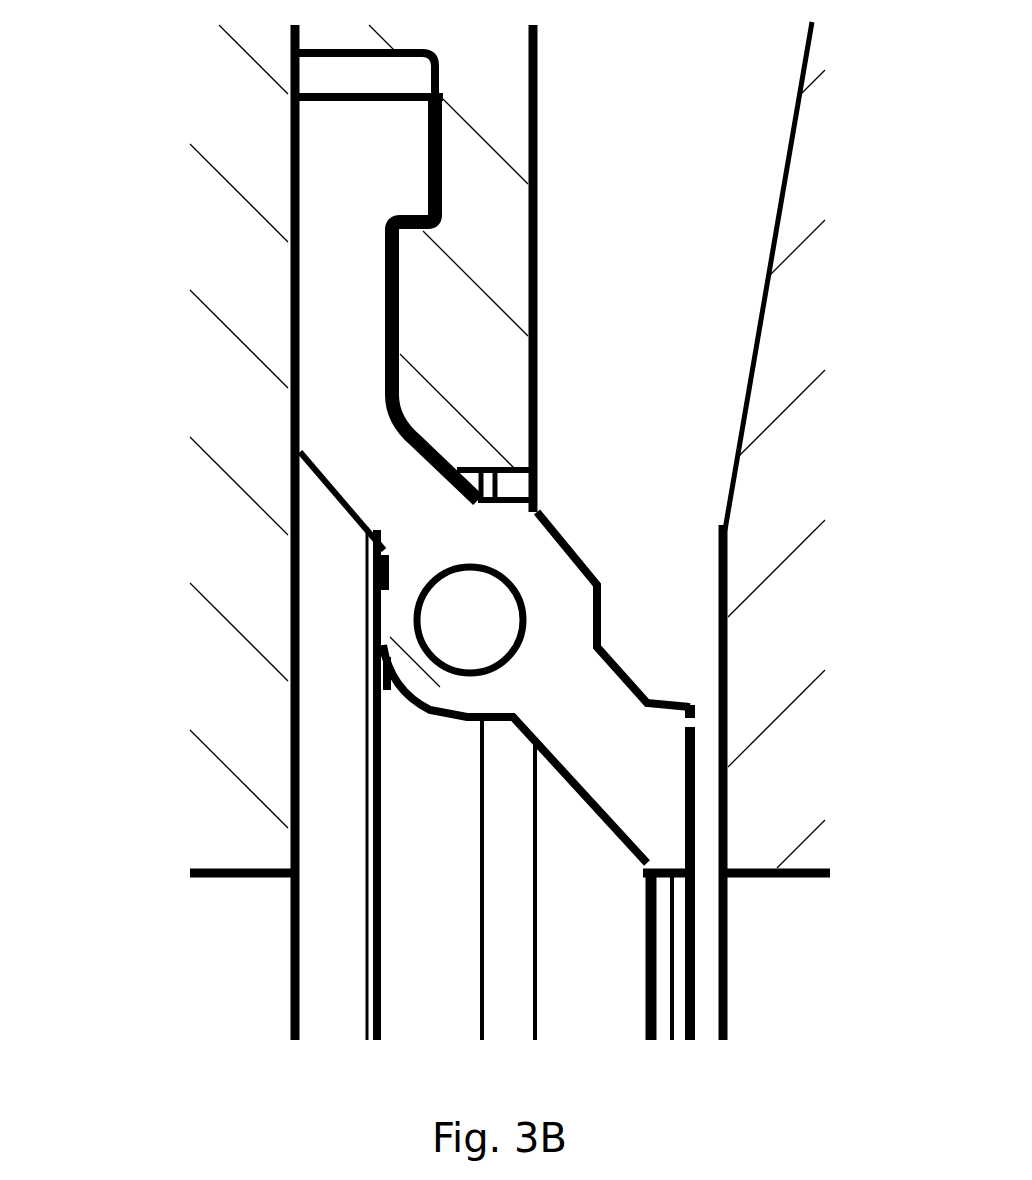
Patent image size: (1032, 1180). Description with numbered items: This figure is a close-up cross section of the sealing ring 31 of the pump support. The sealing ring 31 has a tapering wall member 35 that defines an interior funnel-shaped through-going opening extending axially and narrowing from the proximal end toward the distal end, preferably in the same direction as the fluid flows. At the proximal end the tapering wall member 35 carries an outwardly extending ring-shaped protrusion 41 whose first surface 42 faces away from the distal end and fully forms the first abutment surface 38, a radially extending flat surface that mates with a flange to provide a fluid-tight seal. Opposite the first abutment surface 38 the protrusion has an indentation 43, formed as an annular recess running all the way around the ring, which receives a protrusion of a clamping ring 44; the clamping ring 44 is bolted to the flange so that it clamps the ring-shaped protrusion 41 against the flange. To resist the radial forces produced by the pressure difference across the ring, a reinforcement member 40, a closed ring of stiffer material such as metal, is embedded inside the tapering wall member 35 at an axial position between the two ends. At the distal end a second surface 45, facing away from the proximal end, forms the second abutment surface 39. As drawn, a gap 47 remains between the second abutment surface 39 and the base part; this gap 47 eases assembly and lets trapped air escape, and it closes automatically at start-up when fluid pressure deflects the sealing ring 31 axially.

The sealing ring 31 is at (352, 572).
The tapering wall member 35 is at (408, 515).
The first abutment surface 38 is at (290, 278).
The second abutment surface 39 is at (697, 776).
The reinforcement member 40 is at (480, 596).
The outwardly extending ring-shaped protrusion 41 is at (324, 245).
The first surface 42 is at (292, 167).
The indentation 43 is at (404, 322).
The clamping ring 44 is at (542, 158).
The second surface 45 is at (699, 804).
The gap 47 is at (705, 835).